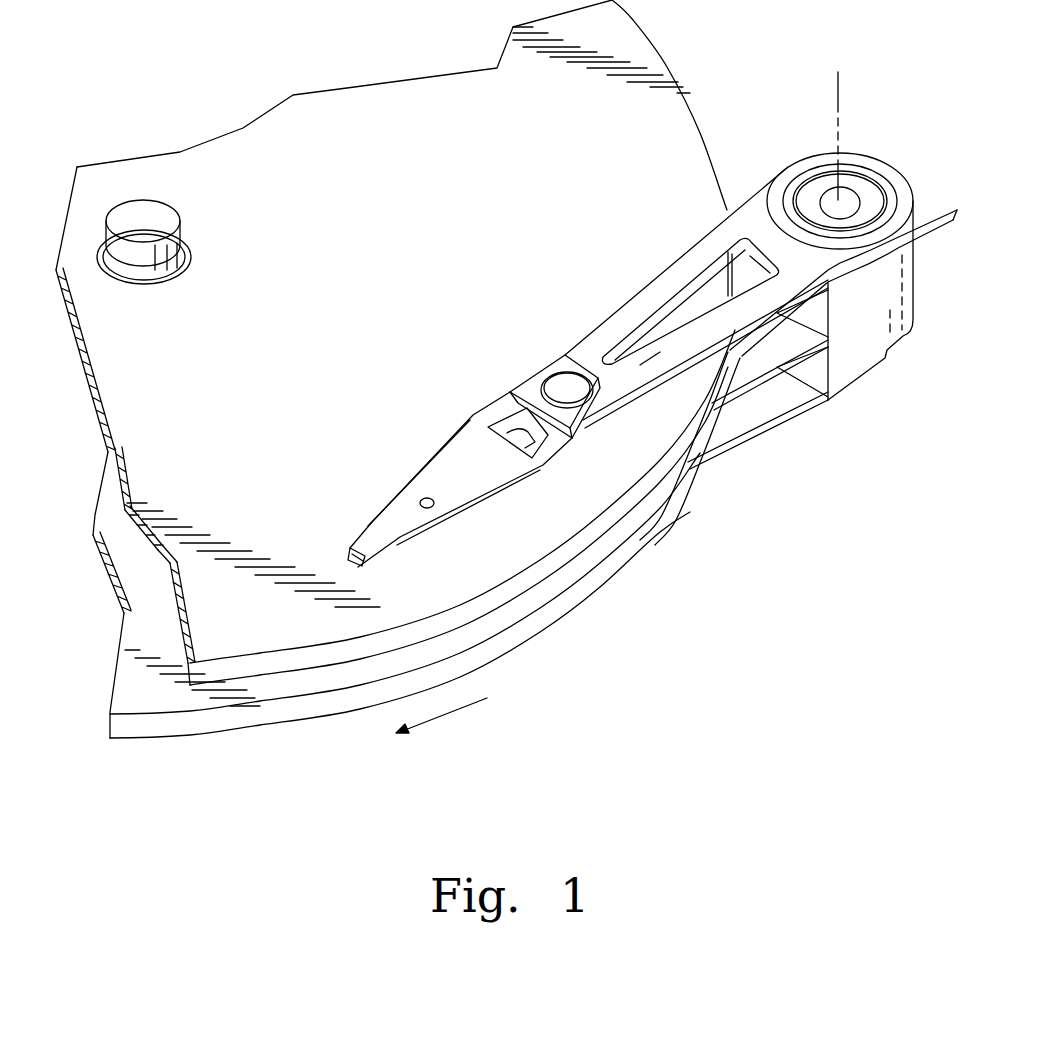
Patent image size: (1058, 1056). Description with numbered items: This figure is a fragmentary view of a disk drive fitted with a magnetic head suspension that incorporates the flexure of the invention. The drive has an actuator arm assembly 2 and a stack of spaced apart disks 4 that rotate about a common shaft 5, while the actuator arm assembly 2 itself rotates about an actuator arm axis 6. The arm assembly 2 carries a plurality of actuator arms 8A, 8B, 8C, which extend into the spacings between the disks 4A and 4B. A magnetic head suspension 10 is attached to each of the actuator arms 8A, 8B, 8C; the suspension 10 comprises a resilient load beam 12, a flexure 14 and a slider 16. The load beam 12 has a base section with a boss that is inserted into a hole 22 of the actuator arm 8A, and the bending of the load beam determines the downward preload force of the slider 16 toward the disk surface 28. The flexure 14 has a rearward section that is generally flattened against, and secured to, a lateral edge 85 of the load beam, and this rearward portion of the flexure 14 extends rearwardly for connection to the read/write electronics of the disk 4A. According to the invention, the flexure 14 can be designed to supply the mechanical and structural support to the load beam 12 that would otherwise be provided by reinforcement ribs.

The actuator arm assembly 2 is at (761, 308).
The disks 4 is at (395, 405).
The disk 4A is at (268, 327).
The disk 4B is at (327, 717).
The common shaft 5 is at (165, 203).
The actuator arm axis 6 is at (840, 122).
The actuator arm 8A is at (645, 292).
The actuator arm 8B is at (740, 393).
The actuator arm 8C is at (800, 412).
The magnetic head suspension 10 is at (445, 436).
The load beam 12 is at (440, 480).
The flexure 14 is at (935, 222).
The slider 16 is at (352, 555).
The hole 22 is at (567, 372).
The disk surface 28 is at (487, 563).
The lateral edge 85 is at (657, 372).